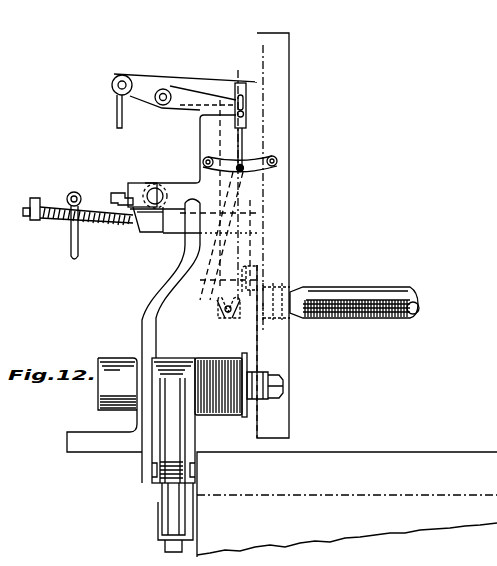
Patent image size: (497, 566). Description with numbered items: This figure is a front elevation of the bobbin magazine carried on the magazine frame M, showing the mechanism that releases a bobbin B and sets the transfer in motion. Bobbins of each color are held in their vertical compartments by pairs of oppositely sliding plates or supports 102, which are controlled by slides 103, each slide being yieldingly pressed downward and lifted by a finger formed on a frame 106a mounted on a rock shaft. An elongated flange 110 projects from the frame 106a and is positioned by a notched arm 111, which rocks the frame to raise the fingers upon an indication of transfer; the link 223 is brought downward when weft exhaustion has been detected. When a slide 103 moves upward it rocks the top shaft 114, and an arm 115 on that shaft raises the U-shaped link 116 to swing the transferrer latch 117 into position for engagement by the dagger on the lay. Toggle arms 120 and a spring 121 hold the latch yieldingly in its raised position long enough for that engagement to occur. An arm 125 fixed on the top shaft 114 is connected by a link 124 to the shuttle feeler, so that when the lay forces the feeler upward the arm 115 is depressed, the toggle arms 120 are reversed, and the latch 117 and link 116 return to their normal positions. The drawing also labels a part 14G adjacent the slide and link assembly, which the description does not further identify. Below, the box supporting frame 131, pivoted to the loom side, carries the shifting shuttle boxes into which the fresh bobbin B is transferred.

The magazine frame M is at (261, 26).
The arm 115 is at (202, 98).
The arm 125 is at (115, 78).
The top shaft 114 is at (163, 90).
The link 124 is at (117, 126).
The spring 121 is at (246, 164).
The toggle arms 120 is at (222, 160).
The notched arm 111 is at (86, 196).
The link 223 is at (79, 250).
The elongated flange 110 is at (118, 192).
The frame 106a is at (140, 191).
The body 14G is at (172, 365).
The transferrer latch 117 is at (168, 493).
The U-shaped link 116 is at (158, 528).
The slide 103 is at (219, 318).
The sliding plates 102 is at (210, 307).
The bobbin B is at (332, 290).
The box supporting frame 131 is at (387, 462).